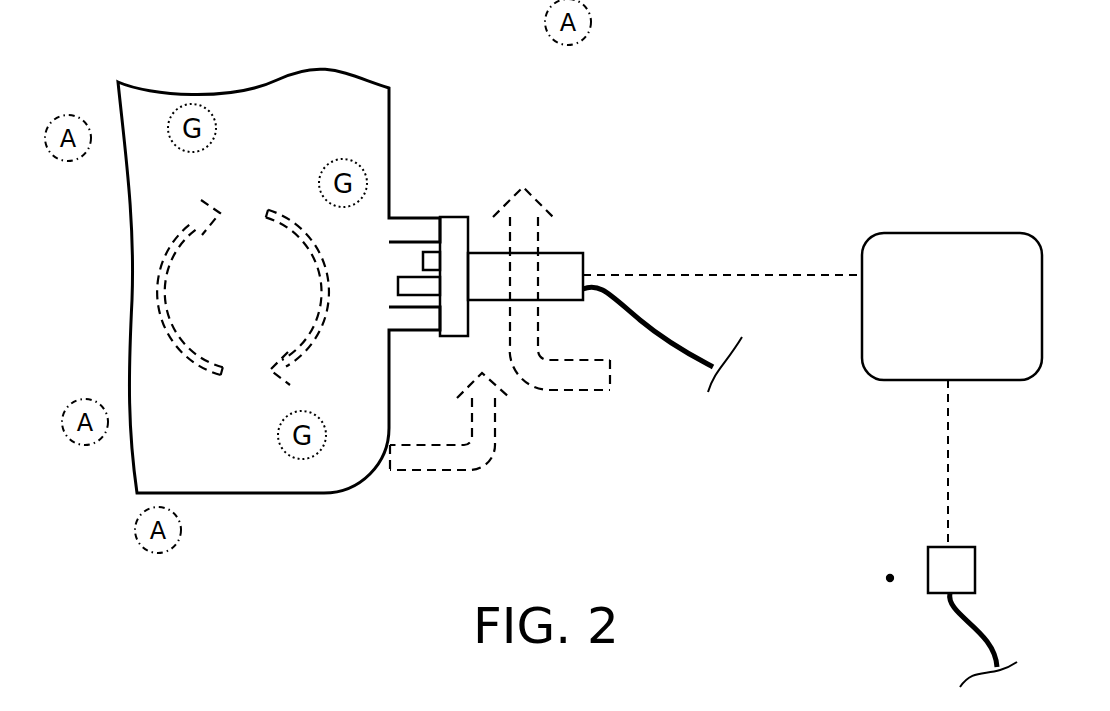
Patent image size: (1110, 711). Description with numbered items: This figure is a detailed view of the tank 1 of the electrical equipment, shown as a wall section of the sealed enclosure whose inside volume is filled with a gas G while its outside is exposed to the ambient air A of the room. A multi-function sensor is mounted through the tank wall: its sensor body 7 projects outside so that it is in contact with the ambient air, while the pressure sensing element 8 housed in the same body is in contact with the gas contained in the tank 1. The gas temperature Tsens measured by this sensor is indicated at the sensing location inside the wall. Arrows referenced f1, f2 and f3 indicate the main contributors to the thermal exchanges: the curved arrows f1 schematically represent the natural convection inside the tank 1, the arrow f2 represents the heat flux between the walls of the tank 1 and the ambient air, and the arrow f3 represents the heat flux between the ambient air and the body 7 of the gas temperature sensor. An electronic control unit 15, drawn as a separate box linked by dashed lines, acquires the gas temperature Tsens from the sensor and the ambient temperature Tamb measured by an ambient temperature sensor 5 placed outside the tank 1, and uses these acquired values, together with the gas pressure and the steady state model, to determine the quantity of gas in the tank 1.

The tank 1 is at (380, 482).
The ambient temperature sensor 5 is at (950, 572).
The sensor body 7 is at (557, 272).
The pressure sensing element 8 is at (415, 320).
The electronic control unit 15 is at (973, 325).
The natural convection arrow f1 is at (162, 335).
The wall heat flux arrow f2 is at (480, 437).
The sensor heat flux arrow f3 is at (570, 375).
The gas temperature Tsens is at (417, 283).
The ambient temperature Tamb is at (890, 578).